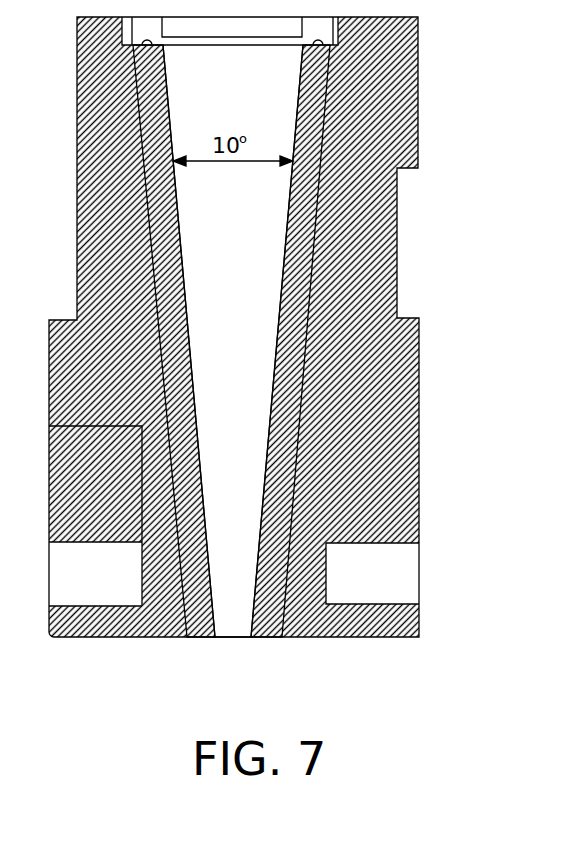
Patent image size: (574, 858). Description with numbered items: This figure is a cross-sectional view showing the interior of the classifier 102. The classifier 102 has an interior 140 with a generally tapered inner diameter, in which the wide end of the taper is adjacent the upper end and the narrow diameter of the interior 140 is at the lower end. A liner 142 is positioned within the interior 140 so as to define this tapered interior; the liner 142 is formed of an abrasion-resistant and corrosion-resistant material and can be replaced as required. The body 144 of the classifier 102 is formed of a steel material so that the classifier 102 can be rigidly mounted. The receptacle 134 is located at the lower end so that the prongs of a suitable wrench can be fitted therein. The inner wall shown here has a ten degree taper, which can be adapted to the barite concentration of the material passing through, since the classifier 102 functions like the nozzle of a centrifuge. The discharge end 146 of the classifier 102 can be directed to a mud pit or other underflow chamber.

The classifier 102 is at (417, 102).
The receptacle 134 is at (402, 570).
The interior 140 is at (213, 248).
The liner 142 is at (167, 101).
The body 144 is at (402, 378).
The discharge end 146 is at (242, 638).